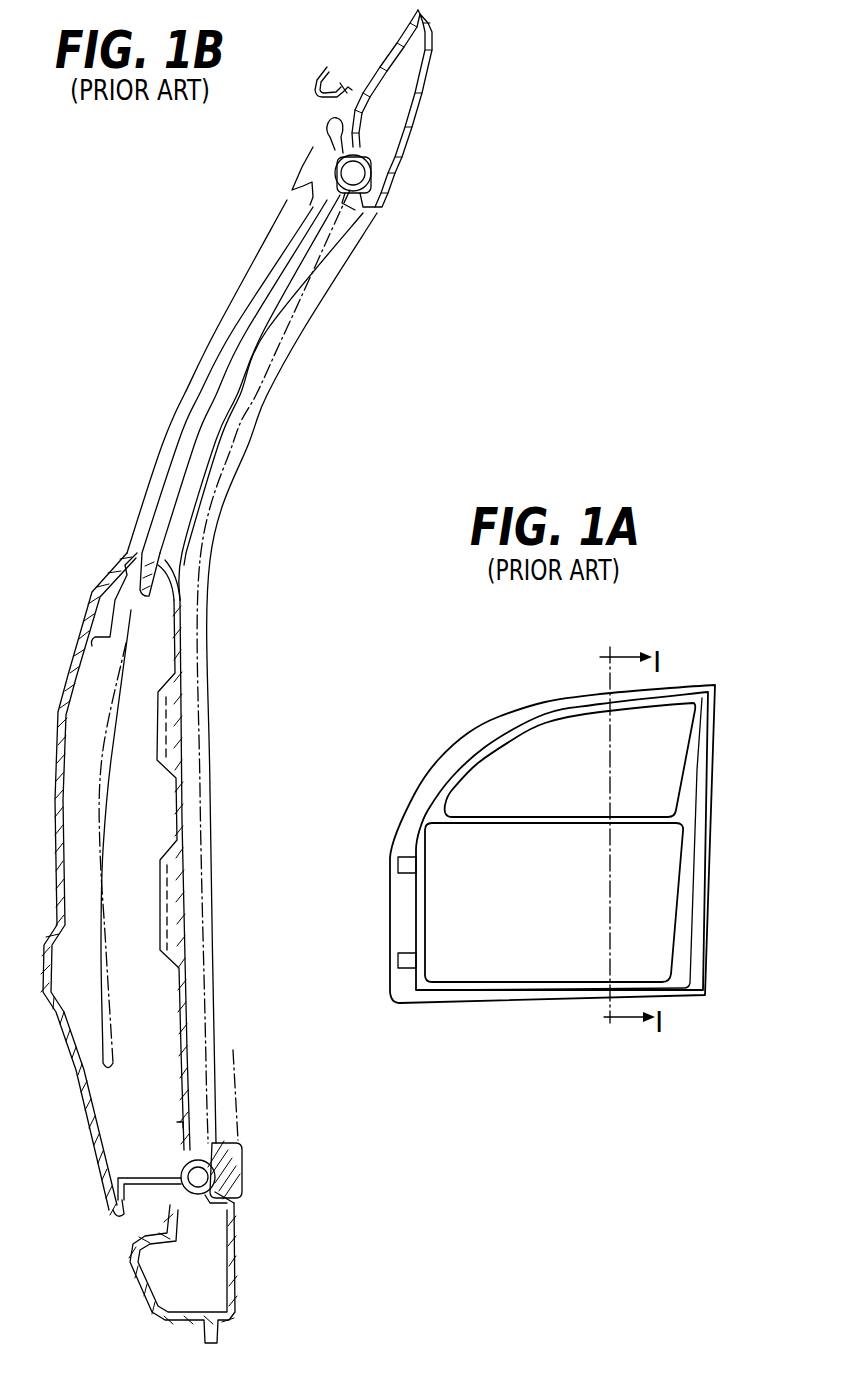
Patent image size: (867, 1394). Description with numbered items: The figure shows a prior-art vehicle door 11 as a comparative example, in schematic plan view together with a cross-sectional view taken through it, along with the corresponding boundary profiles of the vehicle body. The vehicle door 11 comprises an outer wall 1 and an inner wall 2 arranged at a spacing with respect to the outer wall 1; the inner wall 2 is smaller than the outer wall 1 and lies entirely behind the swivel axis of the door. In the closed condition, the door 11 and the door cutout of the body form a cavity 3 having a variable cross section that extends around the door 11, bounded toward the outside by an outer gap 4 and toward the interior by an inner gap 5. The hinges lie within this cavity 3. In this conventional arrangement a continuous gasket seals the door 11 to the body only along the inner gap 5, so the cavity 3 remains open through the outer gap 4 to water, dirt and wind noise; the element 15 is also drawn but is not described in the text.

The door sash 1 is at (302, 165).
The door inner panel 2 is at (187, 1043).
The retainer 3 is at (327, 144).
The weather strip 4 is at (312, 111).
The seal member 5 is at (214, 1128).
The door outer panel 11 is at (88, 806).
The hinge pin portion 15 is at (347, 207).